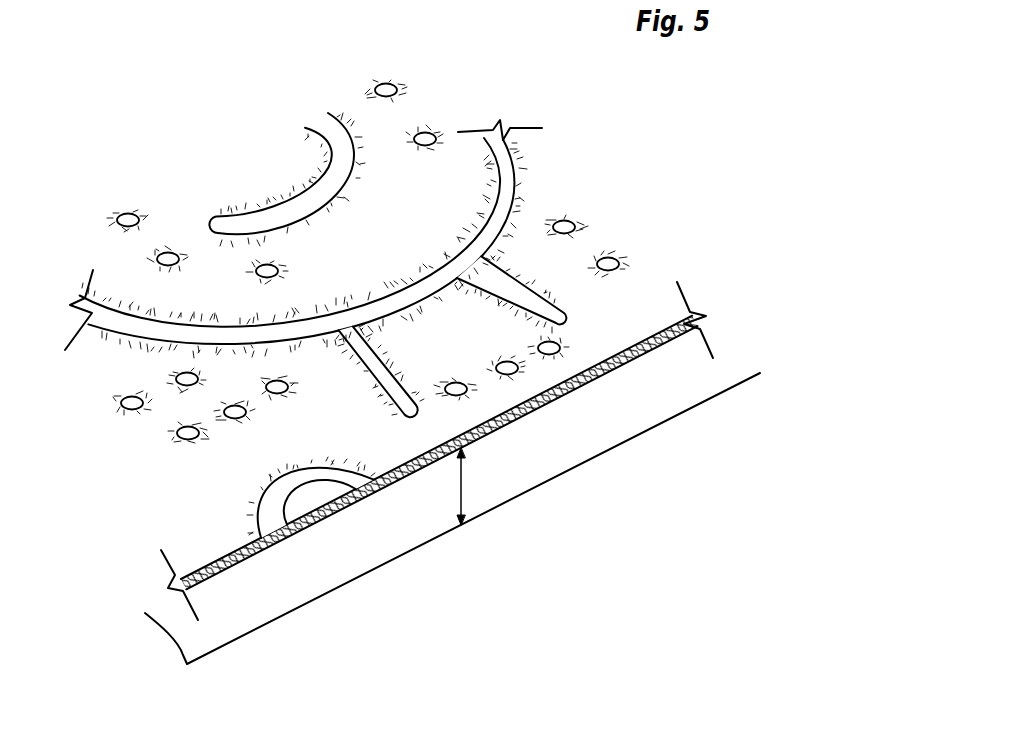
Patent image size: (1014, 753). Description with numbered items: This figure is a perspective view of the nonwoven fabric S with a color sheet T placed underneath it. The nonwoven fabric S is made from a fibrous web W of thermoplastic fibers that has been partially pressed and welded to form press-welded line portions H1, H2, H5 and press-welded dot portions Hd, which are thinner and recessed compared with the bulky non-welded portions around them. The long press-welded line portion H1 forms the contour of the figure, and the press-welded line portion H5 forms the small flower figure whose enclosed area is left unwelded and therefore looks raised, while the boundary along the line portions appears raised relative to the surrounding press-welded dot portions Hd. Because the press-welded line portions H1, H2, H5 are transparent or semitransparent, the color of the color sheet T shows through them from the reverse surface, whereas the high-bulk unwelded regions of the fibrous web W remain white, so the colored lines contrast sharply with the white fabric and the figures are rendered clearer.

The press-welded line portion H1 is at (315, 268).
The press-welded line portion H2 is at (278, 213).
The press-welded line portion H5 is at (327, 516).
The press-welded dot portion Hd is at (388, 90).
The nonwoven fabric S is at (623, 162).
The fibrous web W is at (605, 372).
The color sheet T is at (605, 422).